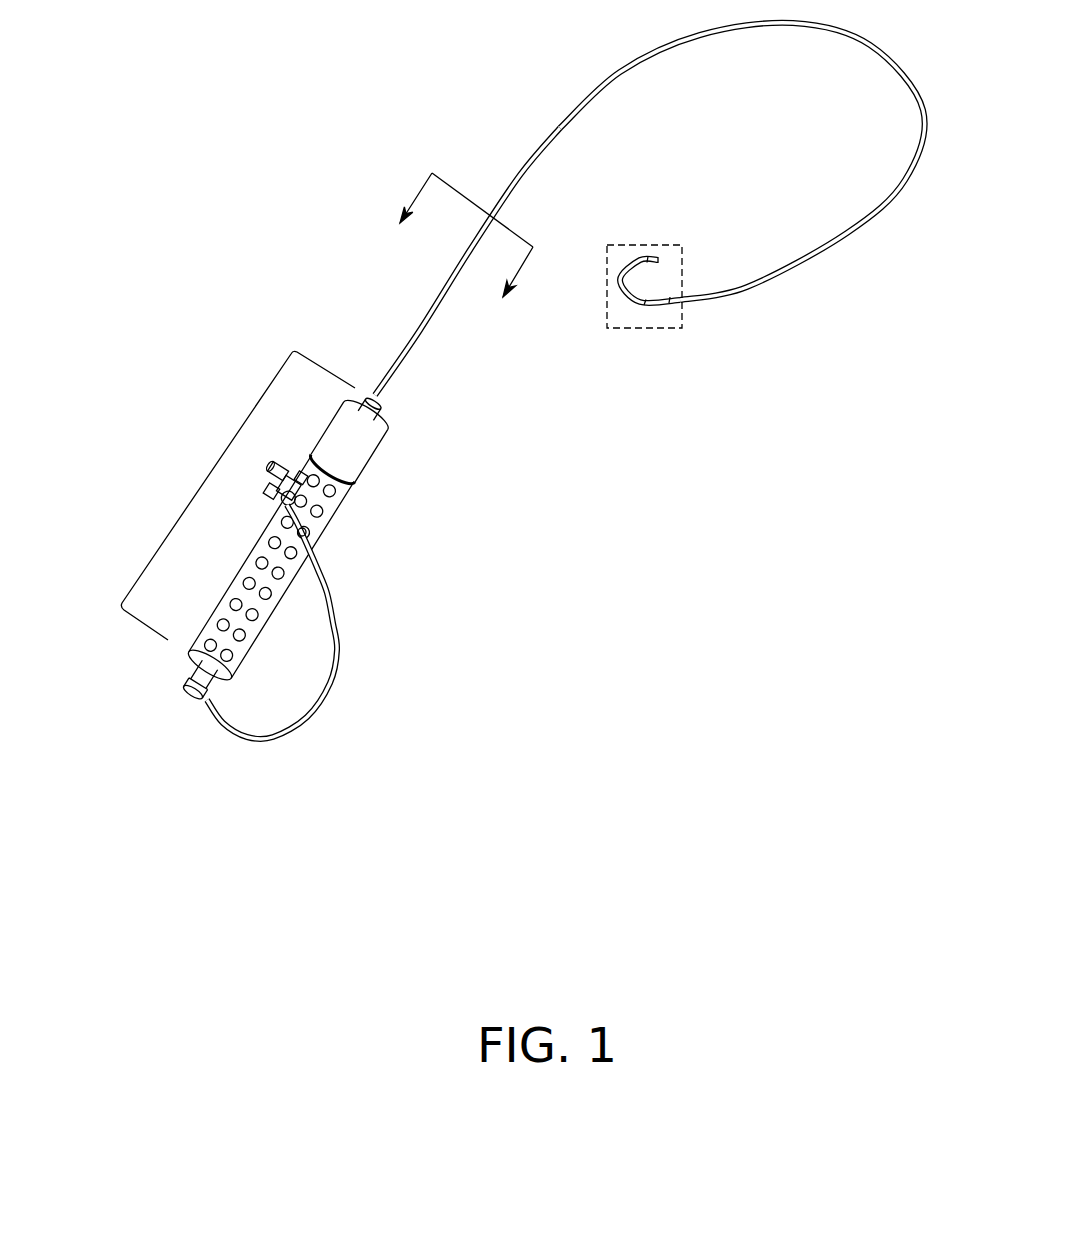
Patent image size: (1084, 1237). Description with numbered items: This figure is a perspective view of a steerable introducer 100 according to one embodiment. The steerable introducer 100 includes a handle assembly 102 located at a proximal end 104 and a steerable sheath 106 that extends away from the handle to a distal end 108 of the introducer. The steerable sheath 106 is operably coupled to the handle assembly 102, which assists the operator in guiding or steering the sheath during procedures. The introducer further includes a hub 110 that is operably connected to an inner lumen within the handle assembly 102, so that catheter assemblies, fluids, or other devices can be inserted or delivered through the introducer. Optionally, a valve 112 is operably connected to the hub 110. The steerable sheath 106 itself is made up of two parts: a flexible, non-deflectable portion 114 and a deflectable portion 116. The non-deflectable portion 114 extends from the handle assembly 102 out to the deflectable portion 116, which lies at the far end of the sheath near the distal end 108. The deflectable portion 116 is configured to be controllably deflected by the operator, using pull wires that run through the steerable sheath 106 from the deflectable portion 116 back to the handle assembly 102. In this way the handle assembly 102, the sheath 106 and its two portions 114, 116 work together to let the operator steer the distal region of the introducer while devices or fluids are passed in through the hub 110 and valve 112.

The steerable introducer 100 is at (325, 157).
The handle assembly 102 is at (230, 441).
The proximal end 104 is at (162, 697).
The steerable sheath 106 is at (440, 300).
The distal end 108 is at (687, 242).
The hub 110 is at (193, 713).
The valve 112 is at (265, 498).
The non-deflectable portion 114 is at (606, 76).
The deflectable portion 116 is at (651, 330).